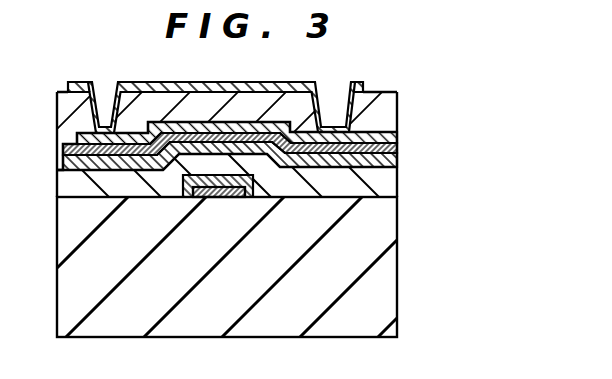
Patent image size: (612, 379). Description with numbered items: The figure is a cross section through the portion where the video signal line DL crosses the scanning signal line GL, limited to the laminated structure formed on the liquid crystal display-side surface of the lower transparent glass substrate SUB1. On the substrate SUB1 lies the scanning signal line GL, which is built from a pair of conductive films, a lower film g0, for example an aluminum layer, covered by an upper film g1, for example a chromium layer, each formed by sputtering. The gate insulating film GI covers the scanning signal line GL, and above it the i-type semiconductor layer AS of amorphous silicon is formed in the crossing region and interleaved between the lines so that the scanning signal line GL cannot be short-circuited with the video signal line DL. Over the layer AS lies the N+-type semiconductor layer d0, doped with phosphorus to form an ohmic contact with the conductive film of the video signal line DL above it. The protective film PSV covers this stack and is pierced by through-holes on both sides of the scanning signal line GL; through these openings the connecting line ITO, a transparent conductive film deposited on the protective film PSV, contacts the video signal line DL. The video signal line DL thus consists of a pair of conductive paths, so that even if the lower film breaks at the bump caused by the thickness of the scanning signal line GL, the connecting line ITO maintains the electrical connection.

The connecting line of transparent conductive film ITO is at (367, 88).
The protective film PSV is at (386, 111).
The video signal line DL is at (396, 137).
The N+-type semiconductor layer d0 is at (394, 148).
The i-type semiconductor layer AS is at (390, 165).
The gate insulating film GI is at (388, 186).
The lower transparent glass substrate SUB1 is at (390, 263).
The scanning signal line GL is at (225, 245).
The lower conductive film g0 is at (212, 198).
The upper conductive film g1 is at (248, 198).